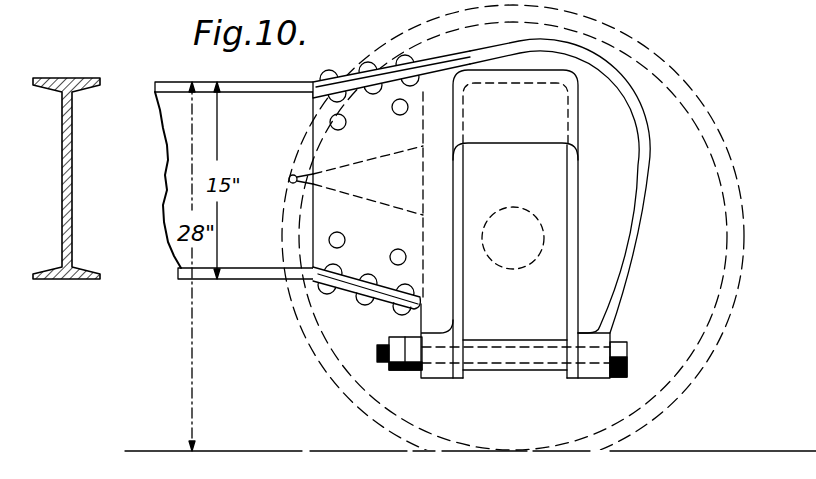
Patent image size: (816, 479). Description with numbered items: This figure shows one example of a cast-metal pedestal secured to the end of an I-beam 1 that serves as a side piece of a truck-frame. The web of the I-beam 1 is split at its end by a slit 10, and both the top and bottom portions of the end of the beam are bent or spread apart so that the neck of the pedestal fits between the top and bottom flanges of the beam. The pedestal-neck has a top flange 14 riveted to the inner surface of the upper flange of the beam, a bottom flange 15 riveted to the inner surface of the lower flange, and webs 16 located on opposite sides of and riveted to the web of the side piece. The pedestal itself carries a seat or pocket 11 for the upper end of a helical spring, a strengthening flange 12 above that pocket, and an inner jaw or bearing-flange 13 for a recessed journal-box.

The I-beam 1 is at (163, 186).
The slit 10 is at (310, 183).
The seat or pocket 11 is at (515, 224).
The strengthening flange 12 is at (560, 201).
The inner jaw or bearing-flange 13 is at (471, 200).
The top flange 14 is at (356, 88).
The bottom flange 15 is at (312, 280).
The web 16 is at (388, 235).